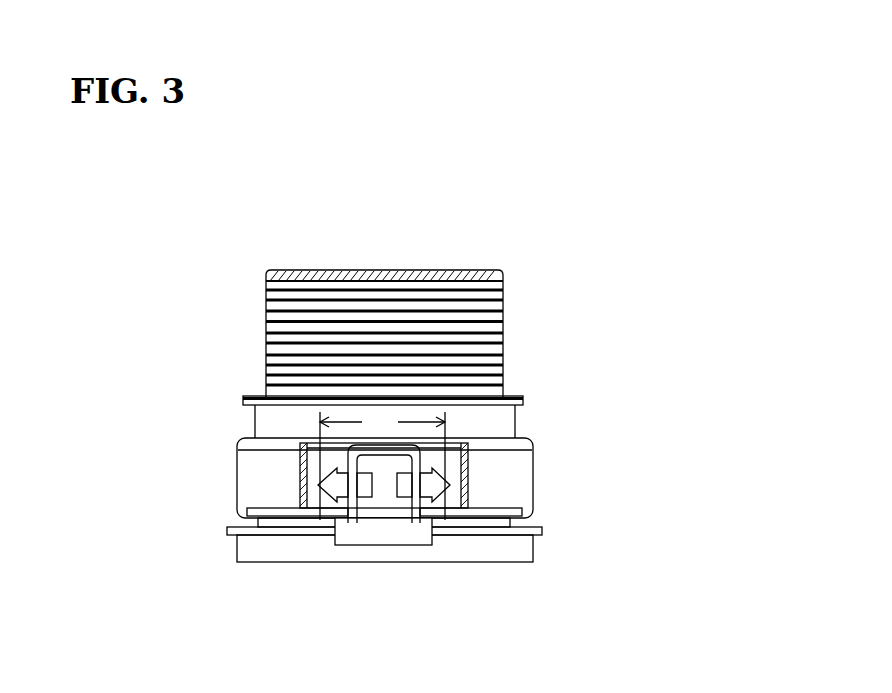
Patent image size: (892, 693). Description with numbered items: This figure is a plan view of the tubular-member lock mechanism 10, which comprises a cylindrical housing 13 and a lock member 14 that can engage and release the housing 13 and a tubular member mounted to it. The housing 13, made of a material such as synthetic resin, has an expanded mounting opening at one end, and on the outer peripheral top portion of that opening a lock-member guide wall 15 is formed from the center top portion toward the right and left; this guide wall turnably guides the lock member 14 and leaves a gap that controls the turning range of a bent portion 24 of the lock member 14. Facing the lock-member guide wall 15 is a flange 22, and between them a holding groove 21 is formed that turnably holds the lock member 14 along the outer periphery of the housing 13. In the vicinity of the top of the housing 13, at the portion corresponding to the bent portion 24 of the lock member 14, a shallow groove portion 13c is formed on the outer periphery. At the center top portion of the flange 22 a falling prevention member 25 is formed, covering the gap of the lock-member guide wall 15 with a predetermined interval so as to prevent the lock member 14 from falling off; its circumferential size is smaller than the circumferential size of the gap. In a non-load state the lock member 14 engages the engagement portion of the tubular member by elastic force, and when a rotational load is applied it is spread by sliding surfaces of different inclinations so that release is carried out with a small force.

The tubular-member lock mechanism 10 is at (361, 167).
The housing 13 is at (463, 268).
The shallow groove portion 13c is at (327, 465).
The lock member 14 is at (473, 463).
The lock-member guide wall 15 is at (273, 507).
The holding groove 21 is at (245, 522).
The flange 22 is at (273, 533).
The bent portion 24 is at (383, 453).
The falling prevention member 25 is at (383, 523).